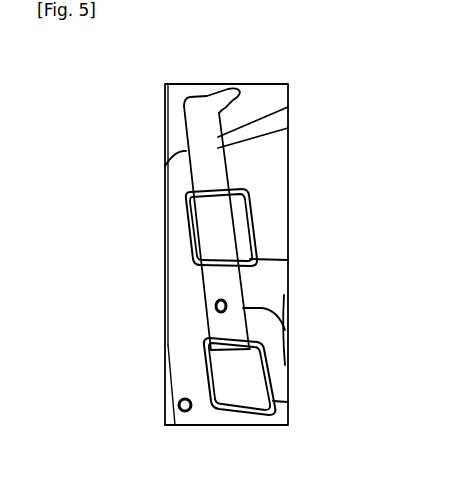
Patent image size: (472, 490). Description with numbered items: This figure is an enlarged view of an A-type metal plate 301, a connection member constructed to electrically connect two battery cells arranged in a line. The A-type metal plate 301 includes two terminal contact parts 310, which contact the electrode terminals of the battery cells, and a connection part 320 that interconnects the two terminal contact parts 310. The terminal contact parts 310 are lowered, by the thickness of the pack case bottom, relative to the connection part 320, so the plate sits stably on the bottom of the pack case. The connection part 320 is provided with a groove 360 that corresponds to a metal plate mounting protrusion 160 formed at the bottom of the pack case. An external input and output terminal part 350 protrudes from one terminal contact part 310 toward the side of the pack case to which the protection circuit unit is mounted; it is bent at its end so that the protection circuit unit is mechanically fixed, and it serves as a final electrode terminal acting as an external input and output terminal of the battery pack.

The A-type metal plate 301 is at (265, 151).
The external input and output terminal part 350 is at (188, 99).
The terminal contact part 310 is at (192, 206).
The metal plate mounting protrusion 160 is at (214, 304).
The connection part 320 is at (205, 318).
The groove 360 is at (285, 343).